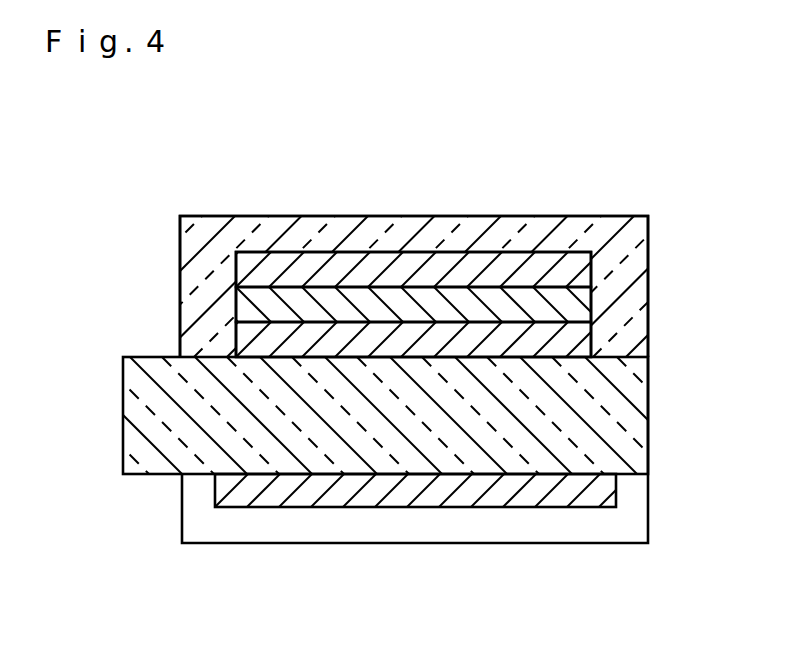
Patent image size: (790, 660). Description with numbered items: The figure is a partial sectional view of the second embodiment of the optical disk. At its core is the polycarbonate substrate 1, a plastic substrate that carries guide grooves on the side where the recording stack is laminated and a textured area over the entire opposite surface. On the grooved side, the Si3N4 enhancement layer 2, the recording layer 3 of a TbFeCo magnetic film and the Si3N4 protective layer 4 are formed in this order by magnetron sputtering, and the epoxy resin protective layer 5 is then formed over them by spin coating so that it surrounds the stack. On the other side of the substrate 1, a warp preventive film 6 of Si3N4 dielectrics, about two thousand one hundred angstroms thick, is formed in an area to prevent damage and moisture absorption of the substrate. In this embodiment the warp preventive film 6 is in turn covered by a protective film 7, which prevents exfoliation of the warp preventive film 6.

The polycarbonate substrate 1 is at (617, 403).
The Si3N4 enhancement layer 2 is at (580, 347).
The recording layer 3 is at (590, 292).
The Si3N4 protective layer 4 is at (590, 262).
The epoxy resin protective layer 5 is at (565, 222).
The warp preventive film 6 is at (597, 487).
The protective film 7 is at (603, 530).